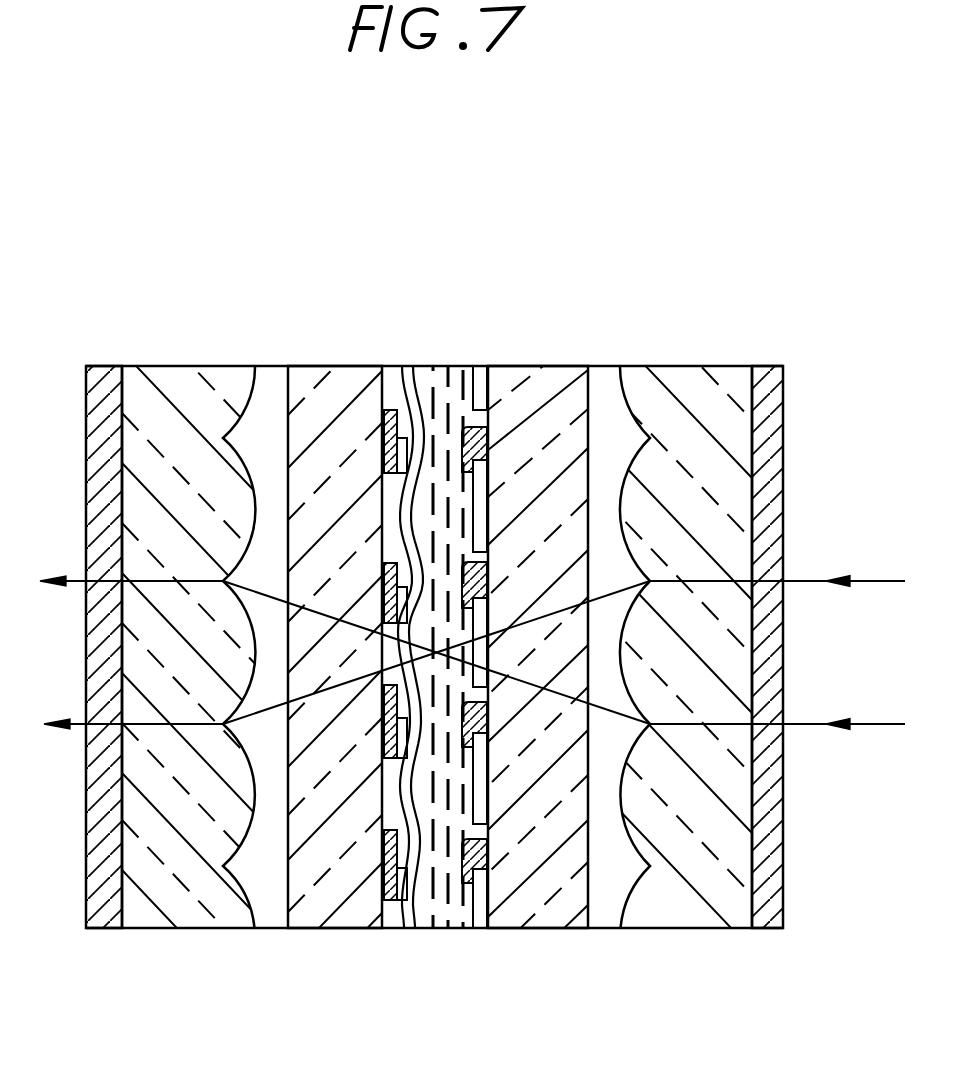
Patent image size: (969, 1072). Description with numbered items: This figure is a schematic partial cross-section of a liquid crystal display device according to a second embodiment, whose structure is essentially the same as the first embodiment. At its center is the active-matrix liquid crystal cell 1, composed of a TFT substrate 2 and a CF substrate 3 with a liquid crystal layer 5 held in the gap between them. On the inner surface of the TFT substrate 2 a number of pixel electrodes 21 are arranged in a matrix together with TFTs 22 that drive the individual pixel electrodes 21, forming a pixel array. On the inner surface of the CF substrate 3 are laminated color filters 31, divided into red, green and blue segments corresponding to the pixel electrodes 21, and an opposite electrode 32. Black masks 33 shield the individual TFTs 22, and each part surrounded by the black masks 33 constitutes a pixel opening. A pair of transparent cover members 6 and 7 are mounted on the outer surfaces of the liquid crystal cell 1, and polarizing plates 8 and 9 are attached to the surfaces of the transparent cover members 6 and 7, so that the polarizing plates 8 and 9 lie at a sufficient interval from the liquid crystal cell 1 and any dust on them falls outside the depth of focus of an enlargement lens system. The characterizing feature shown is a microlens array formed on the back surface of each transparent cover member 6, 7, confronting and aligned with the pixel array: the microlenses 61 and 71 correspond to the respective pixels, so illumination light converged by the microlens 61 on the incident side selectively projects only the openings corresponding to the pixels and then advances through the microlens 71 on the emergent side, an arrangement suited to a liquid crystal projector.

The liquid crystal cell 1 is at (479, 262).
The TFT substrate 2 is at (532, 372).
The CF substrate 3 is at (333, 372).
The liquid crystal layer 5 is at (435, 368).
The transparent cover member 6 is at (690, 393).
The transparent cover member 7 is at (167, 372).
The polarizing plate 8 is at (762, 368).
The polarizing plate 9 is at (100, 366).
The pixel electrode 21 is at (482, 930).
The TFT 22 is at (487, 858).
The color filter 31 is at (393, 930).
The opposite electrode 32 is at (407, 930).
The black mask 33 is at (385, 868).
The microlens 61 is at (618, 660).
The microlens 71 is at (255, 612).